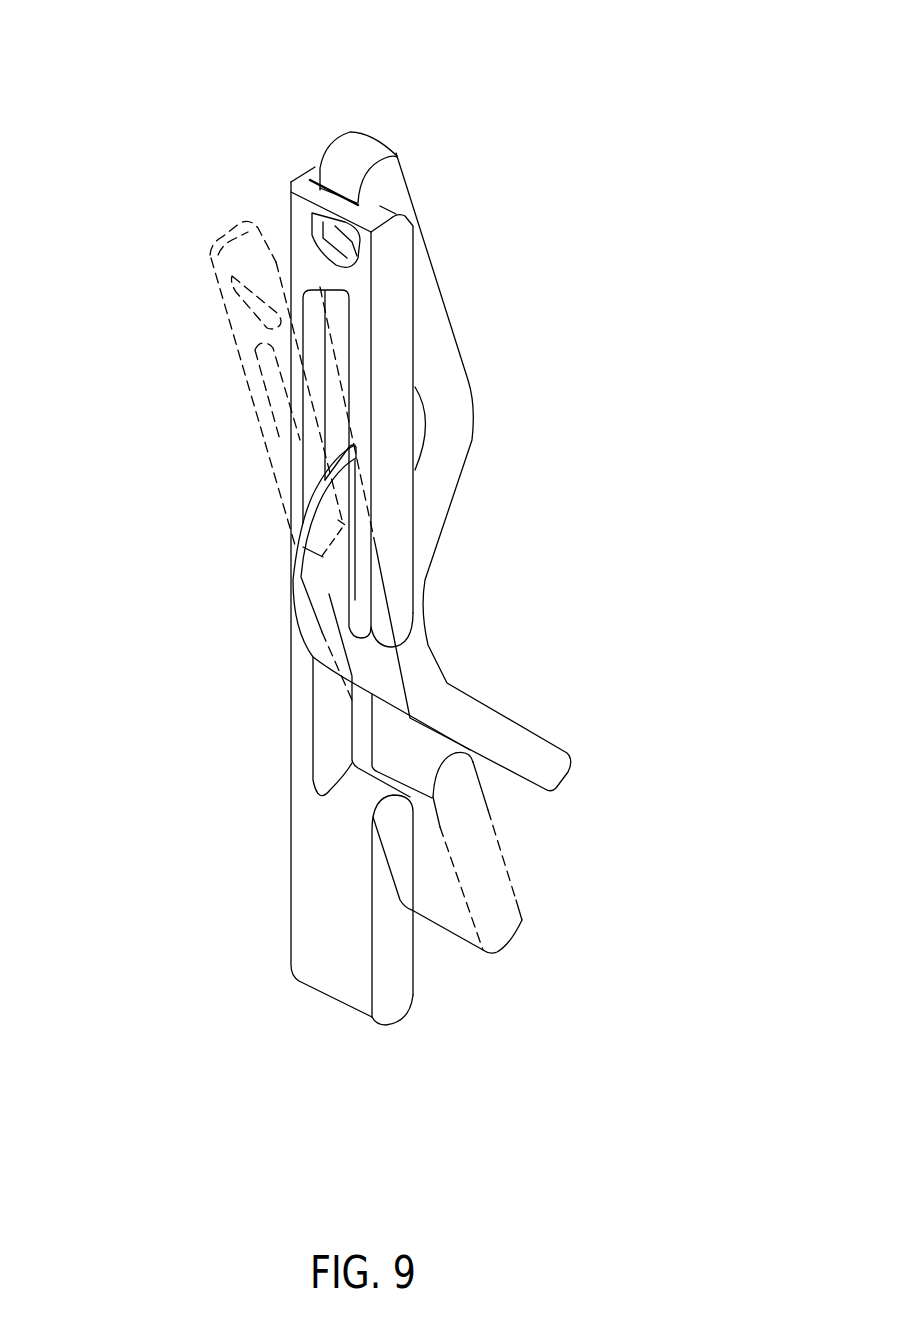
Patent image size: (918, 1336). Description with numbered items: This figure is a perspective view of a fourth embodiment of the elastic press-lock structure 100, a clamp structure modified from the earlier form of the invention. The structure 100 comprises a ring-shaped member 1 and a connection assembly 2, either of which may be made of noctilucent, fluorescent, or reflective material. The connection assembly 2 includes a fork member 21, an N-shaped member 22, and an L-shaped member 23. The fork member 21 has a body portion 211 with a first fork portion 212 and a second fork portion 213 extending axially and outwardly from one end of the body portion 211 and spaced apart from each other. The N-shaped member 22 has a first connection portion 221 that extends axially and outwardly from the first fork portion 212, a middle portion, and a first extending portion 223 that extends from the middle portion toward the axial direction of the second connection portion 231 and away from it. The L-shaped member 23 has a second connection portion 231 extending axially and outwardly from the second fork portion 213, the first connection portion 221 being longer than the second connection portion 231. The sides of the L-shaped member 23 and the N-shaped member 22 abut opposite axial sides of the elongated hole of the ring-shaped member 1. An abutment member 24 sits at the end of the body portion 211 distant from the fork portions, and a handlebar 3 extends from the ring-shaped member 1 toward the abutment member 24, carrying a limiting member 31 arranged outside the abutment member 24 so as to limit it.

The elastic press-lock structure 100 is at (428, 92).
The ring-shaped member 1 is at (572, 778).
The connection assembly 2 is at (198, 282).
The handlebar 3 is at (410, 152).
The fork member 21 is at (412, 226).
The body portion 211 is at (313, 272).
The first fork portion 212 is at (363, 343).
The second fork portion 213 is at (297, 358).
The N-shaped member 22 is at (388, 611).
The first connection portion 221 is at (366, 576).
The first extending portion 223 is at (343, 903).
The L-shaped member 23 is at (290, 538).
The second connection portion 231 is at (300, 487).
The abutment member 24 is at (340, 262).
The limiting member 31 is at (312, 213).